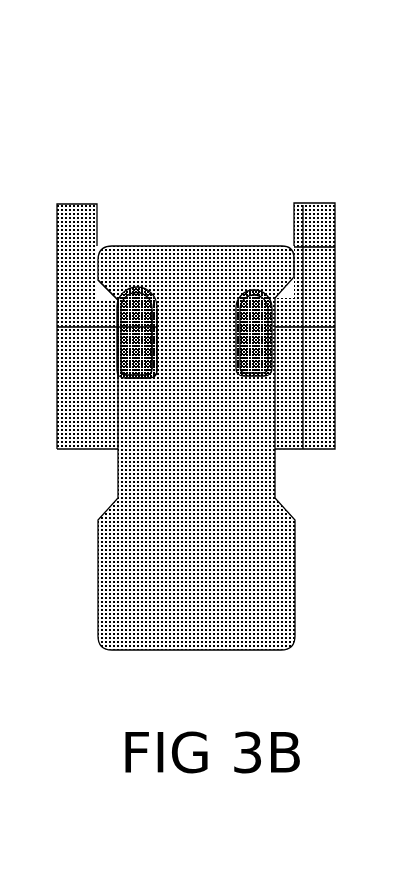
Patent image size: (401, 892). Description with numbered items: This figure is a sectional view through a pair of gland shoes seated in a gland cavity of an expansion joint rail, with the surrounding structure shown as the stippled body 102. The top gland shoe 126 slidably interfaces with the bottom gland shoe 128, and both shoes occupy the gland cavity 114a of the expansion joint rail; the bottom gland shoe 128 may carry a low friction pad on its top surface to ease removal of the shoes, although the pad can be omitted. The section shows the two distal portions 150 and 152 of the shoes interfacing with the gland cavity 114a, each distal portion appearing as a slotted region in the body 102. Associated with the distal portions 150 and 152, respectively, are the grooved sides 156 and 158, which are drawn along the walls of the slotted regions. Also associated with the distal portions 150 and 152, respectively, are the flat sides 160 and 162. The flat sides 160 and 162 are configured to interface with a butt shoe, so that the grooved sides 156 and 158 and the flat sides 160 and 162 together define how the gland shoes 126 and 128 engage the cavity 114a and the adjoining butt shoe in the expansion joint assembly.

The body 102 is at (277, 583).
The top gland shoe 126 is at (78, 210).
The bottom gland shoe 128 is at (93, 441).
The distal portion 150 is at (140, 303).
The flat side 160 is at (118, 298).
The grooved side 156 is at (157, 320).
The gland cavity 114a is at (158, 328).
The distal portion 152 is at (141, 378).
The flat side 162 is at (126, 350).
The grooved side 158 is at (155, 373).